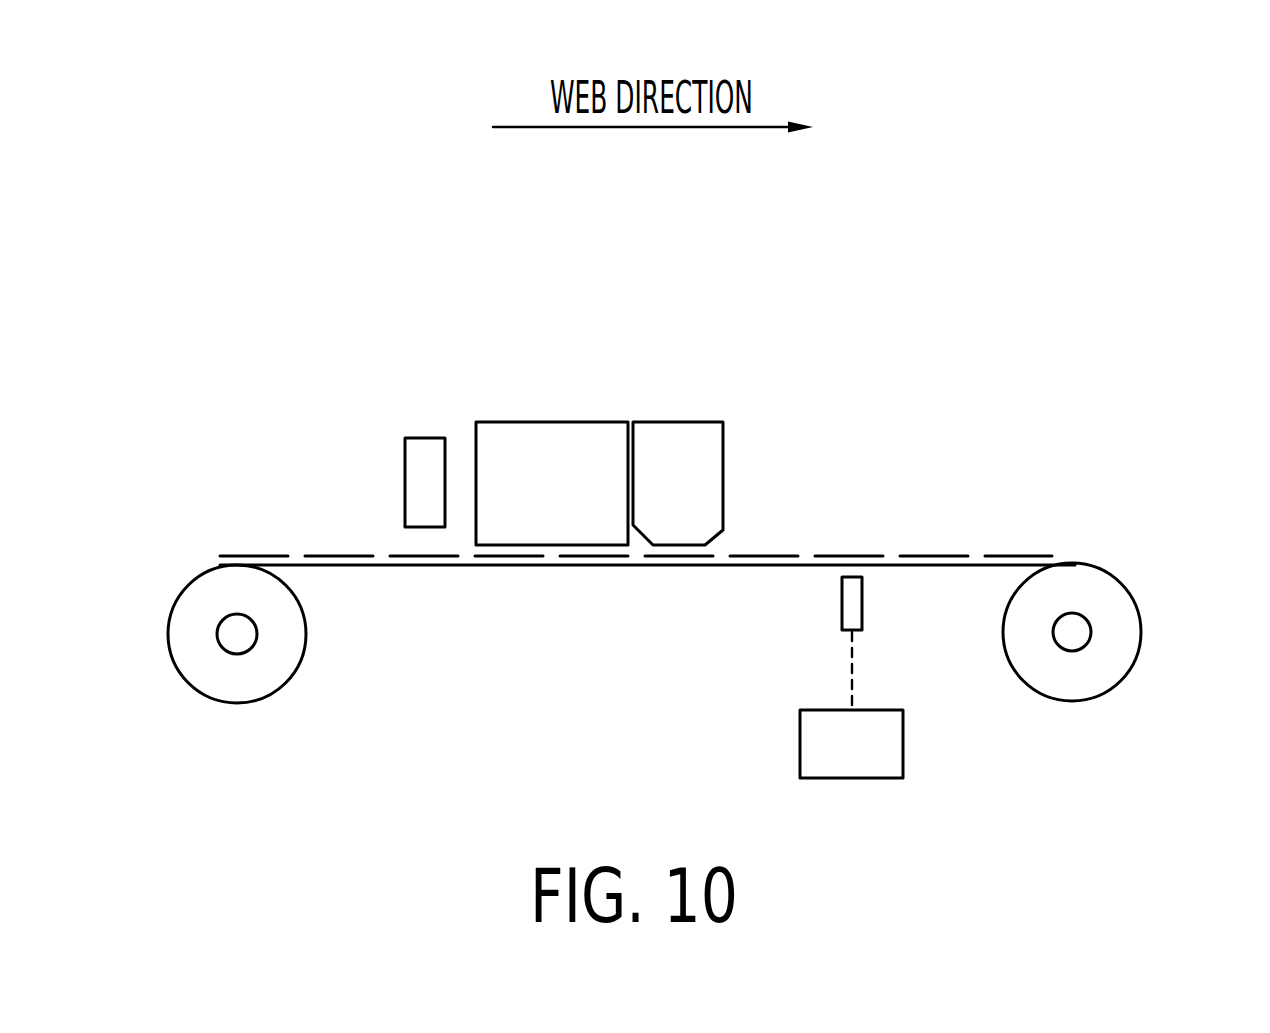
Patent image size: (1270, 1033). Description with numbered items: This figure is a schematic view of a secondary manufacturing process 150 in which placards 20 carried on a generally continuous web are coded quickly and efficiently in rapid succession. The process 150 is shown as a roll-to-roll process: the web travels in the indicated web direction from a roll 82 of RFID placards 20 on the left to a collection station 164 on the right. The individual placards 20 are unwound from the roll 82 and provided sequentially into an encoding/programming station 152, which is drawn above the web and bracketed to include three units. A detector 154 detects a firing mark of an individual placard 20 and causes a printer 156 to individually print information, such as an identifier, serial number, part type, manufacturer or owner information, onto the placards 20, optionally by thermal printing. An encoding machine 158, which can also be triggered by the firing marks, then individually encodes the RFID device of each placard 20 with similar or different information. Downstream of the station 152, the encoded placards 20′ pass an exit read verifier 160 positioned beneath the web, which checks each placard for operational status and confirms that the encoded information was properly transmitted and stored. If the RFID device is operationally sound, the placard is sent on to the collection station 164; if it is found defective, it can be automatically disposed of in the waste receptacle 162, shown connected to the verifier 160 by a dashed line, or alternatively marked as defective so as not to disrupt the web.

The secondary manufacturing process 150 is at (284, 234).
The placard 20 is at (322, 524).
The encoded placard 20′ is at (906, 524).
The roll 82 is at (185, 655).
The encoding/programming station 152 is at (737, 347).
The detector 154 is at (422, 447).
The printer 156 is at (561, 435).
The encoding machine 158 is at (677, 435).
The exit read verifier 160 is at (842, 606).
The waste receptacle 162 is at (810, 745).
The collection station 164 is at (1122, 655).